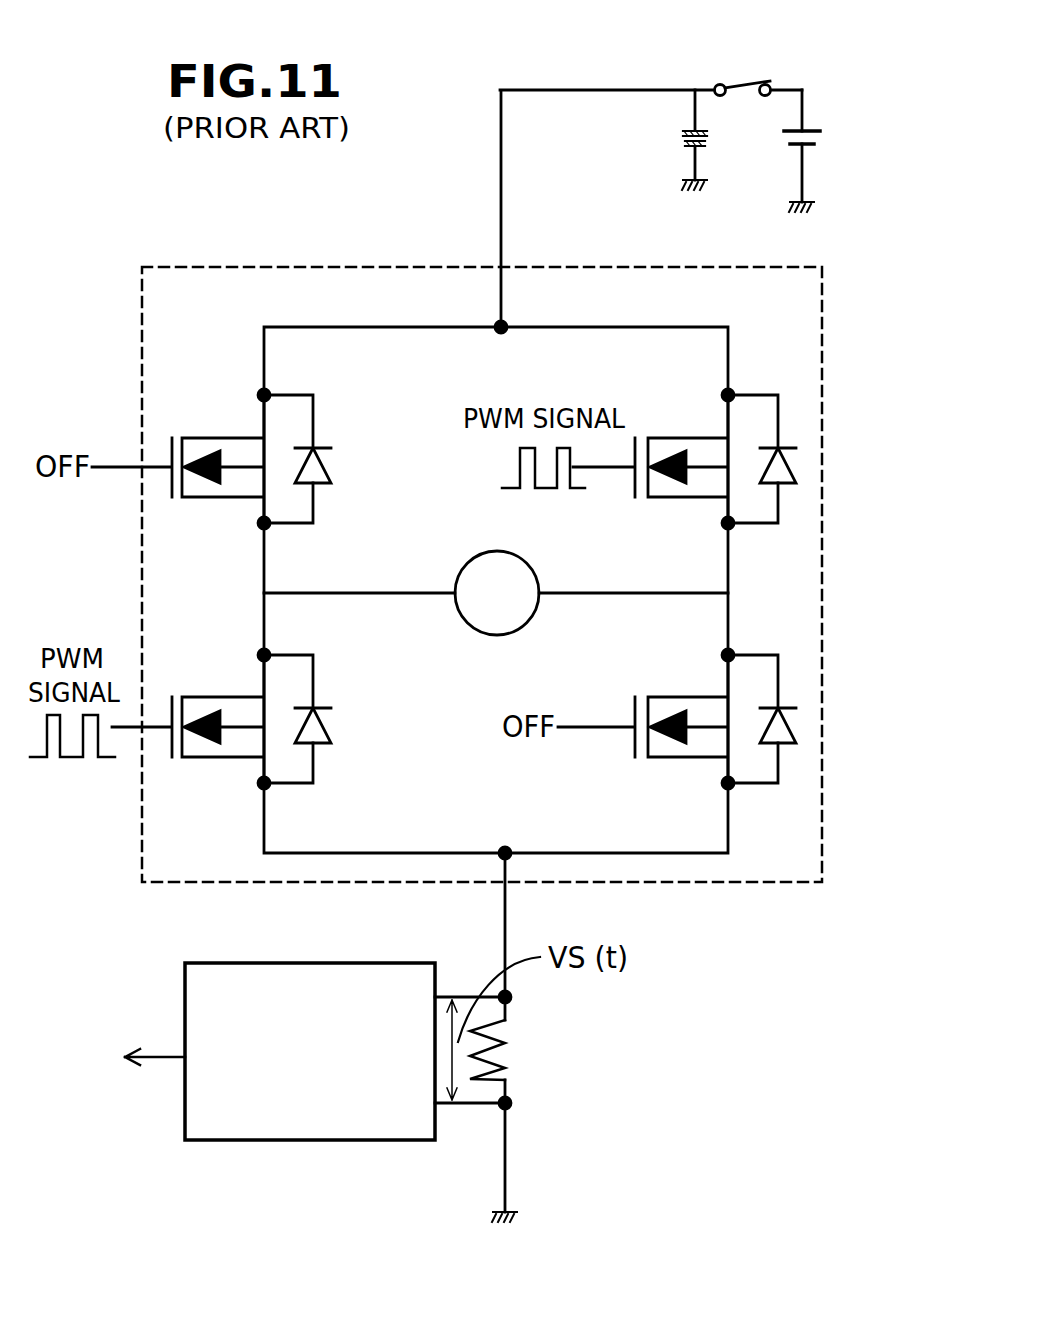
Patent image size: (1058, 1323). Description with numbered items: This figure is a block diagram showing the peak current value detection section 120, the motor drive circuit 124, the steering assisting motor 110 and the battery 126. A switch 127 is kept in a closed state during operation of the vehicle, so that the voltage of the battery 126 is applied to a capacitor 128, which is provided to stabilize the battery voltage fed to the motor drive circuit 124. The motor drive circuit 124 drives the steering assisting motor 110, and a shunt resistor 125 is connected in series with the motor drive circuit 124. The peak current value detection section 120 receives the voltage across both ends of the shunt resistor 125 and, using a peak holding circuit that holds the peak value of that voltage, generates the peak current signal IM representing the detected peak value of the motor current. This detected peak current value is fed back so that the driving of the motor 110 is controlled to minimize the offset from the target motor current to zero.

The steering assisting motor 110 is at (495, 636).
The peak current value detection section 120 is at (315, 1141).
The motor drive circuit 124 is at (824, 593).
The shunt resistor 125 is at (497, 1068).
The battery 126 is at (822, 138).
The switch 127 is at (740, 82).
The capacitor 128 is at (710, 137).